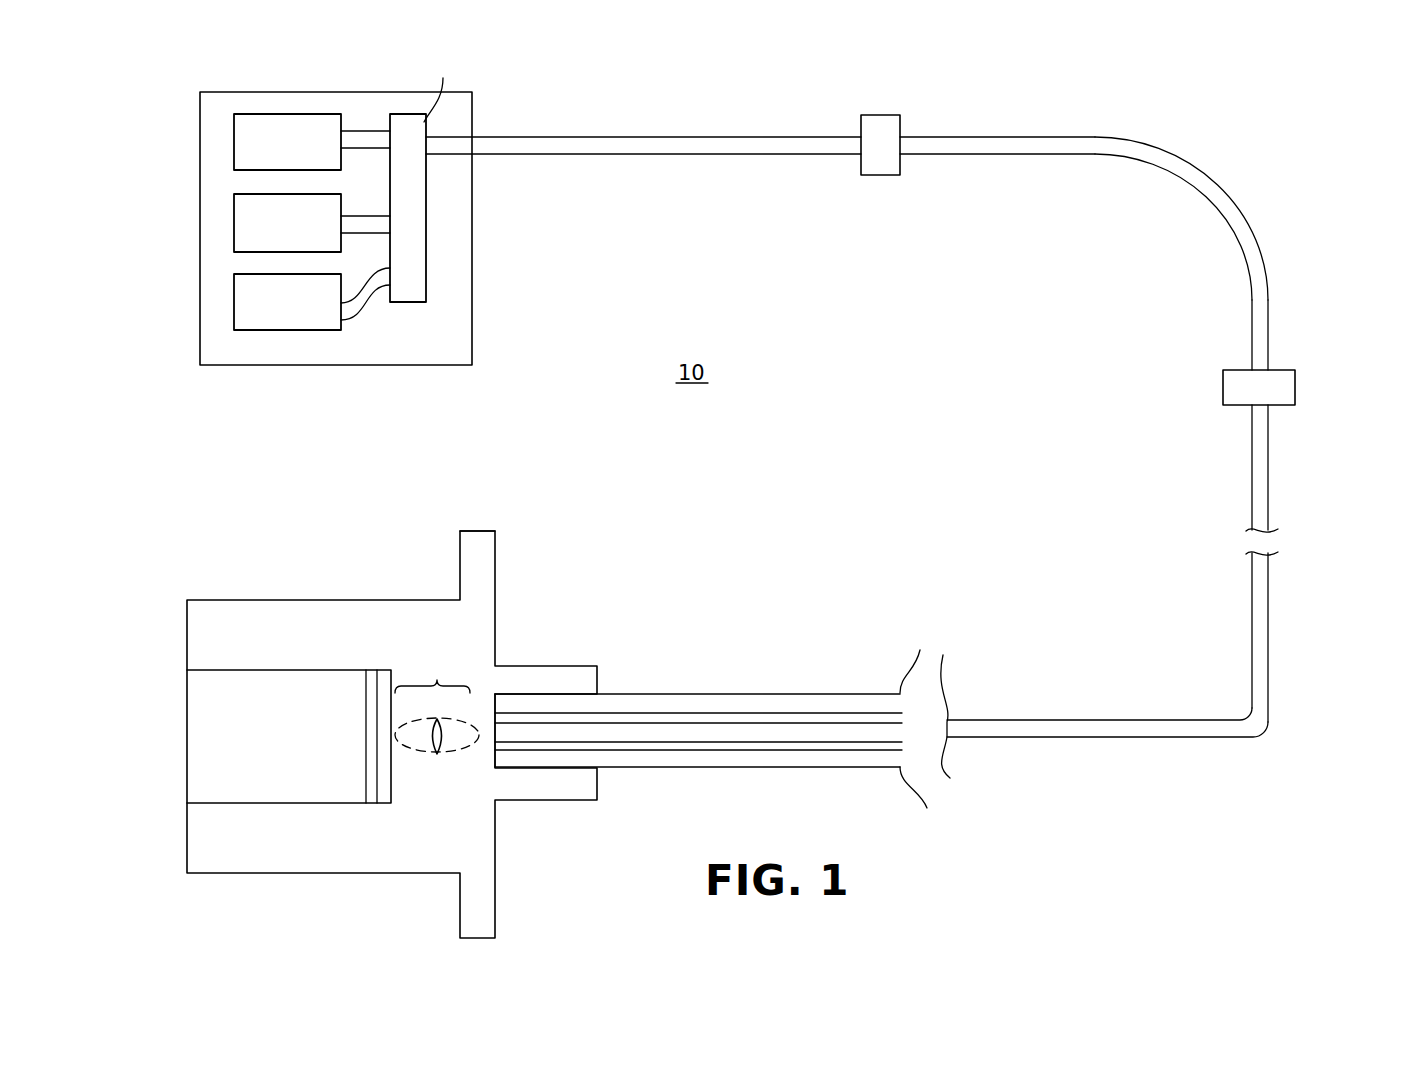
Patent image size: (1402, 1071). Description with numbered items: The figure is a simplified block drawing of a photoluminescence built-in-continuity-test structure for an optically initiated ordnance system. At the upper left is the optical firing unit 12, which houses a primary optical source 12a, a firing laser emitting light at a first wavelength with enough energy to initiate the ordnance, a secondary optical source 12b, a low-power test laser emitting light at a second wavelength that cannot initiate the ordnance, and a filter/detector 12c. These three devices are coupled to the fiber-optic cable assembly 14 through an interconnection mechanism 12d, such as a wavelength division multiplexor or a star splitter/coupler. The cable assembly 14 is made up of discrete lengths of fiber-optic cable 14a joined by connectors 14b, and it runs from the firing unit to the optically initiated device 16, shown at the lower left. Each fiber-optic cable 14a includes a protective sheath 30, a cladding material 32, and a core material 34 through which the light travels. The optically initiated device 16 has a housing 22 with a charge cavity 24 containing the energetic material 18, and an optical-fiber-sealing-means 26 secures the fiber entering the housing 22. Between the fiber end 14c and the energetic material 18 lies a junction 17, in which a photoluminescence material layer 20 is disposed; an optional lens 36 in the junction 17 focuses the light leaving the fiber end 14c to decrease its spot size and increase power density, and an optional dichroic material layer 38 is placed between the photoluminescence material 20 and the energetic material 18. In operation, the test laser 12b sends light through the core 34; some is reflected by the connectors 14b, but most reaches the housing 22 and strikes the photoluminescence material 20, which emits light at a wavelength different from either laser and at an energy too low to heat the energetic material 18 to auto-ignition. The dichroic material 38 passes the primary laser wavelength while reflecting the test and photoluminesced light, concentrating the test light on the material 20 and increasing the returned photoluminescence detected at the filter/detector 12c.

The optical firing unit 12 is at (166, 113).
The primary optical source 12a is at (250, 122).
The secondary optical source 12b is at (245, 208).
The filter/detector 12c is at (294, 327).
The interconnection mechanism 12d is at (417, 227).
The fiber-optic cable assembly 14 is at (1283, 153).
The fiber-optic cable 14a is at (668, 140).
The connector 14b is at (880, 120).
The fiber end 14c is at (495, 750).
The optically initiated device 16 is at (533, 623).
The junction 17 is at (432, 670).
The energetic material 18 is at (280, 685).
The photoluminescence material layer 20 is at (385, 675).
The housing 22 is at (476, 551).
The charge cavity 24 is at (224, 672).
The optical-fiber-sealing-means 26 is at (612, 693).
The protective sheath 30 is at (693, 693).
The cladding material 32 is at (763, 713).
The core material 34 is at (820, 733).
The lens 36 is at (441, 756).
The dichroic material layer 38 is at (370, 675).